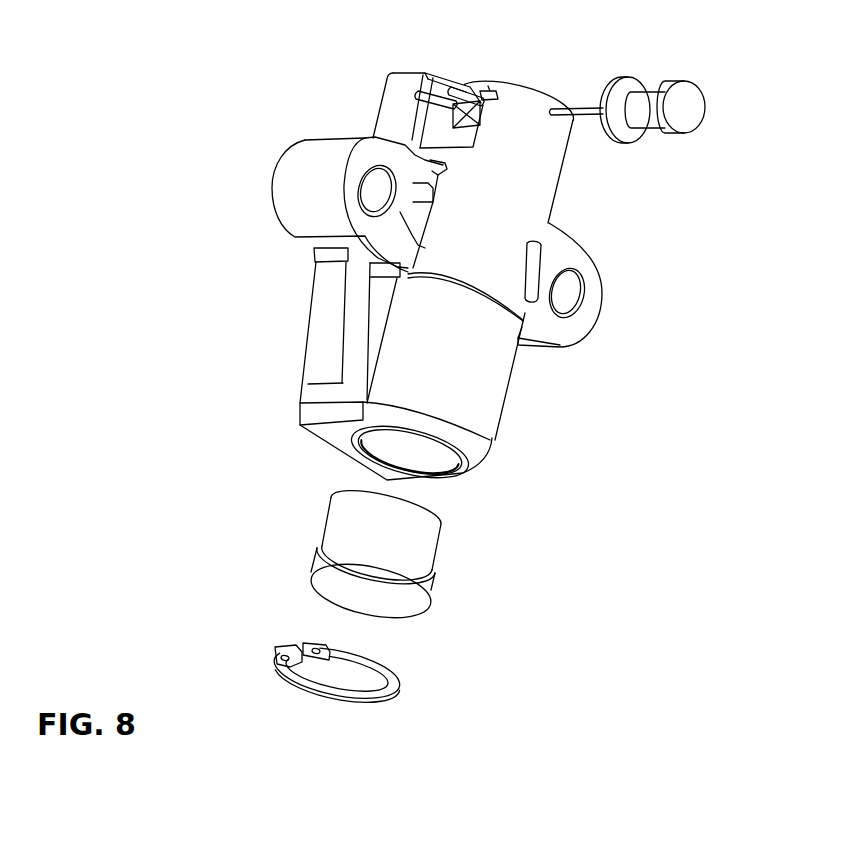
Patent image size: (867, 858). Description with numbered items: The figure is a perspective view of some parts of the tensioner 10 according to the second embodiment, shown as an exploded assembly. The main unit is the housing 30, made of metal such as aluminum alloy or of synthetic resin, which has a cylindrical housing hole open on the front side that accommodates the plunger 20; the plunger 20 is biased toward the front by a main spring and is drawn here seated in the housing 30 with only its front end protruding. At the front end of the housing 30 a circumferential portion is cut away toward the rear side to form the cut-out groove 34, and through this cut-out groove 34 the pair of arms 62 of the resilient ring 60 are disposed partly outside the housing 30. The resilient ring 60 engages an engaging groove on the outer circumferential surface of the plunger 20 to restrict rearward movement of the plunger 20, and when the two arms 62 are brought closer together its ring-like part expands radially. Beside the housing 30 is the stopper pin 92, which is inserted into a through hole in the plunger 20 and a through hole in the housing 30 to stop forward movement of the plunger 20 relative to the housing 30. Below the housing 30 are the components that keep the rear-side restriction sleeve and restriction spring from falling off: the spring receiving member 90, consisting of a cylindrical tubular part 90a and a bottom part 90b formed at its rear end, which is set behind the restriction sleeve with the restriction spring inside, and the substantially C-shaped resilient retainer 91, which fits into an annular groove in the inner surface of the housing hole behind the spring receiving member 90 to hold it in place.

The tensioner 10 is at (238, 79).
The plunger 20 is at (482, 83).
The housing 30 is at (485, 360).
The cut-out groove 34 is at (485, 94).
The resilient ring 60 is at (426, 76).
The arms 62 is at (455, 92).
The spring receiving member 90 is at (460, 533).
The tubular part 90a is at (345, 525).
The bottom part 90b is at (340, 582).
The retainer 91 is at (412, 669).
The stopper pin 92 is at (650, 100).